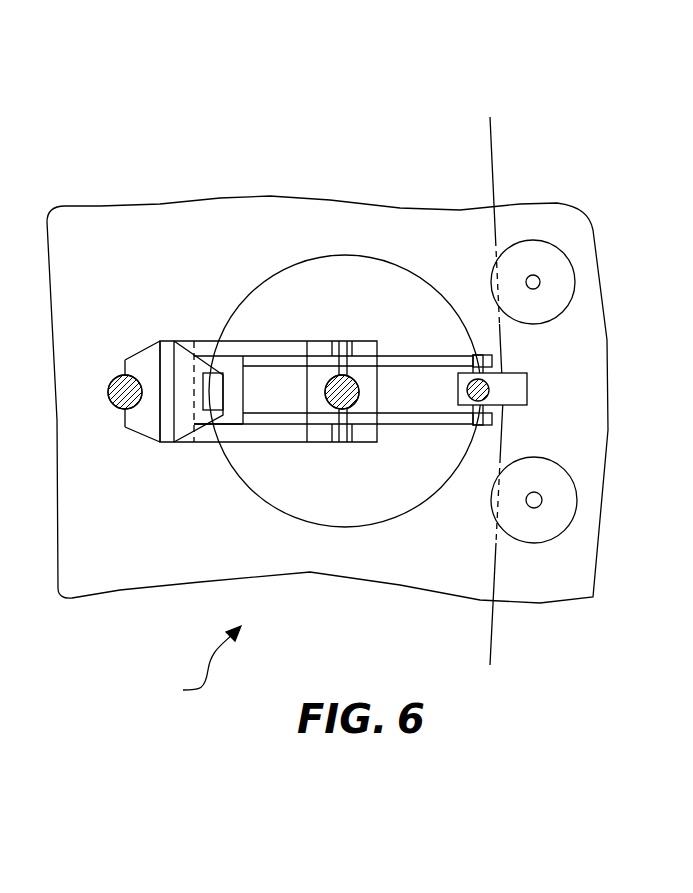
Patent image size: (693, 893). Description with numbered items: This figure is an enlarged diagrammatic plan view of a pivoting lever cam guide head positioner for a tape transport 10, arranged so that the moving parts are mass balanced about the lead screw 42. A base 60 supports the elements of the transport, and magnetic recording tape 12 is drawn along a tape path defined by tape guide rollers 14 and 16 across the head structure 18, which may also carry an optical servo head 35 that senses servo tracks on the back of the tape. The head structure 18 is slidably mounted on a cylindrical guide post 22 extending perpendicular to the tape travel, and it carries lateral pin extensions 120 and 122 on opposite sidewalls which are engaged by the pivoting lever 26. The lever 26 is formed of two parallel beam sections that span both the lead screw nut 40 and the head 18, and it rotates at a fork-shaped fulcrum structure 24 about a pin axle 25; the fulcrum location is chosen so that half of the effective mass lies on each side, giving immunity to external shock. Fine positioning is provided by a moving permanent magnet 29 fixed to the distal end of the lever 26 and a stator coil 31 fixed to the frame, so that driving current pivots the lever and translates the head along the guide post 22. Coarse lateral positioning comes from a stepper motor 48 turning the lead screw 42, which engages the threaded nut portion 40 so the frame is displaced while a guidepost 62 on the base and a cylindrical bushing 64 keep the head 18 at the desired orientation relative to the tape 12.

The tape transport 10 is at (195, 664).
The magnetic recording tape 12 is at (495, 153).
The tape guide roller 14 is at (560, 502).
The tape guide roller 16 is at (570, 283).
The head structure 18 is at (478, 355).
The guide post 22 is at (527, 385).
The fulcrum structure 24 is at (315, 343).
The pin axle 25 is at (343, 343).
The pivoting lever 26 is at (243, 432).
The moving permanent magnet 29 is at (235, 363).
The stator coil 31 is at (185, 370).
The optical servo head 35 is at (488, 388).
The threaded nut portion 40 is at (305, 400).
The lead screw 42 is at (355, 388).
The stepper motor 48 is at (390, 508).
The base 60 is at (96, 213).
The guidepost 62 is at (110, 378).
The cylindrical bushing 64 is at (150, 357).
The lateral pin extension 120 is at (470, 343).
The lateral pin extension 122 is at (475, 425).